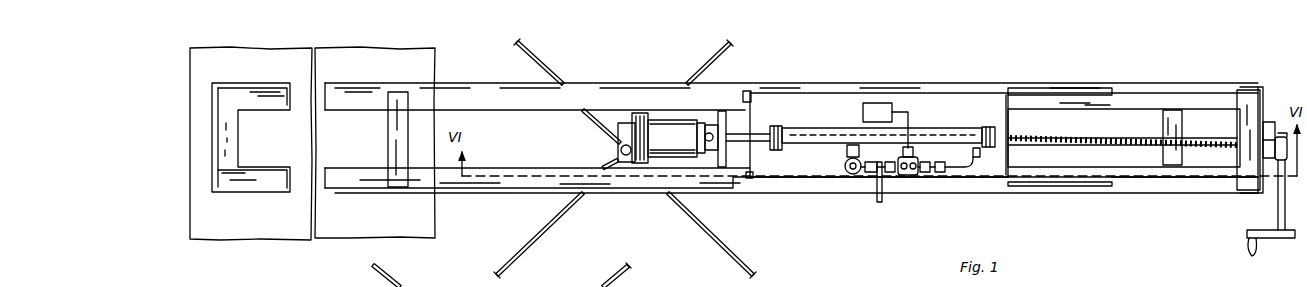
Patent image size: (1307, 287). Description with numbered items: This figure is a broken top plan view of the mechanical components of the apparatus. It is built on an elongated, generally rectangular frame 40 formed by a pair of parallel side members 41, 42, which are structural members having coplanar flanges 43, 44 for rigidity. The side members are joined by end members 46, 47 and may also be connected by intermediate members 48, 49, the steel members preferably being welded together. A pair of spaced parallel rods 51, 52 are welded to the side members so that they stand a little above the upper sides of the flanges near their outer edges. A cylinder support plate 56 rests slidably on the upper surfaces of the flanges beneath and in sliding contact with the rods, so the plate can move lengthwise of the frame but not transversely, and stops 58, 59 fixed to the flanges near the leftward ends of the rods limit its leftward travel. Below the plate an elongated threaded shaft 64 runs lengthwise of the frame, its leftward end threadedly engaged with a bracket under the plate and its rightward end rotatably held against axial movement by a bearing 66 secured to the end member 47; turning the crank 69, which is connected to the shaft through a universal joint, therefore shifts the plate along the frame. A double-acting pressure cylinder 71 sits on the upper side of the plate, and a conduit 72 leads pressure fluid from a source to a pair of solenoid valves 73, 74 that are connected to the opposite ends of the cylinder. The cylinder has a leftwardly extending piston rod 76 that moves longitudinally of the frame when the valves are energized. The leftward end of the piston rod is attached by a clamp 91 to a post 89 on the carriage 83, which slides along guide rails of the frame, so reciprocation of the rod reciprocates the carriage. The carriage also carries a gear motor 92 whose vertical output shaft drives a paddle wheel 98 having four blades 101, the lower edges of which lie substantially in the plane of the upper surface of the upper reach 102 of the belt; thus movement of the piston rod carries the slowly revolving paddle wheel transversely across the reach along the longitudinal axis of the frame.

The frame 40 is at (1248, 66).
The side member 41 is at (1190, 87).
The side member 42 is at (1183, 196).
The flange 43 is at (1213, 97).
The flange 44 is at (1130, 186).
The end member 46 is at (222, 126).
The end member 47 is at (1255, 100).
The intermediate member 48 is at (391, 128).
The intermediate member 49 is at (1158, 119).
The rod 51 is at (1040, 93).
The rod 52 is at (1012, 192).
The cylinder support plate 56 is at (910, 100).
The stop 58 is at (760, 98).
The stop 59 is at (752, 174).
The threaded shaft 64 is at (1066, 135).
The bearing 66 is at (1270, 125).
The crank 69 is at (1276, 240).
The double-acting pressure cylinder 71 is at (836, 127).
The conduit 72 is at (877, 202).
The solenoid valve 73 is at (845, 160).
The solenoid valve 74 is at (918, 157).
The piston rod 76 is at (743, 136).
The carriage 83 is at (657, 106).
The post 89 is at (707, 130).
The clamp 91 is at (716, 146).
The gear motor 92 is at (668, 138).
The paddle wheel 98 is at (680, 222).
The blade 101 is at (718, 238).
The upper reach 102 is at (251, 143).